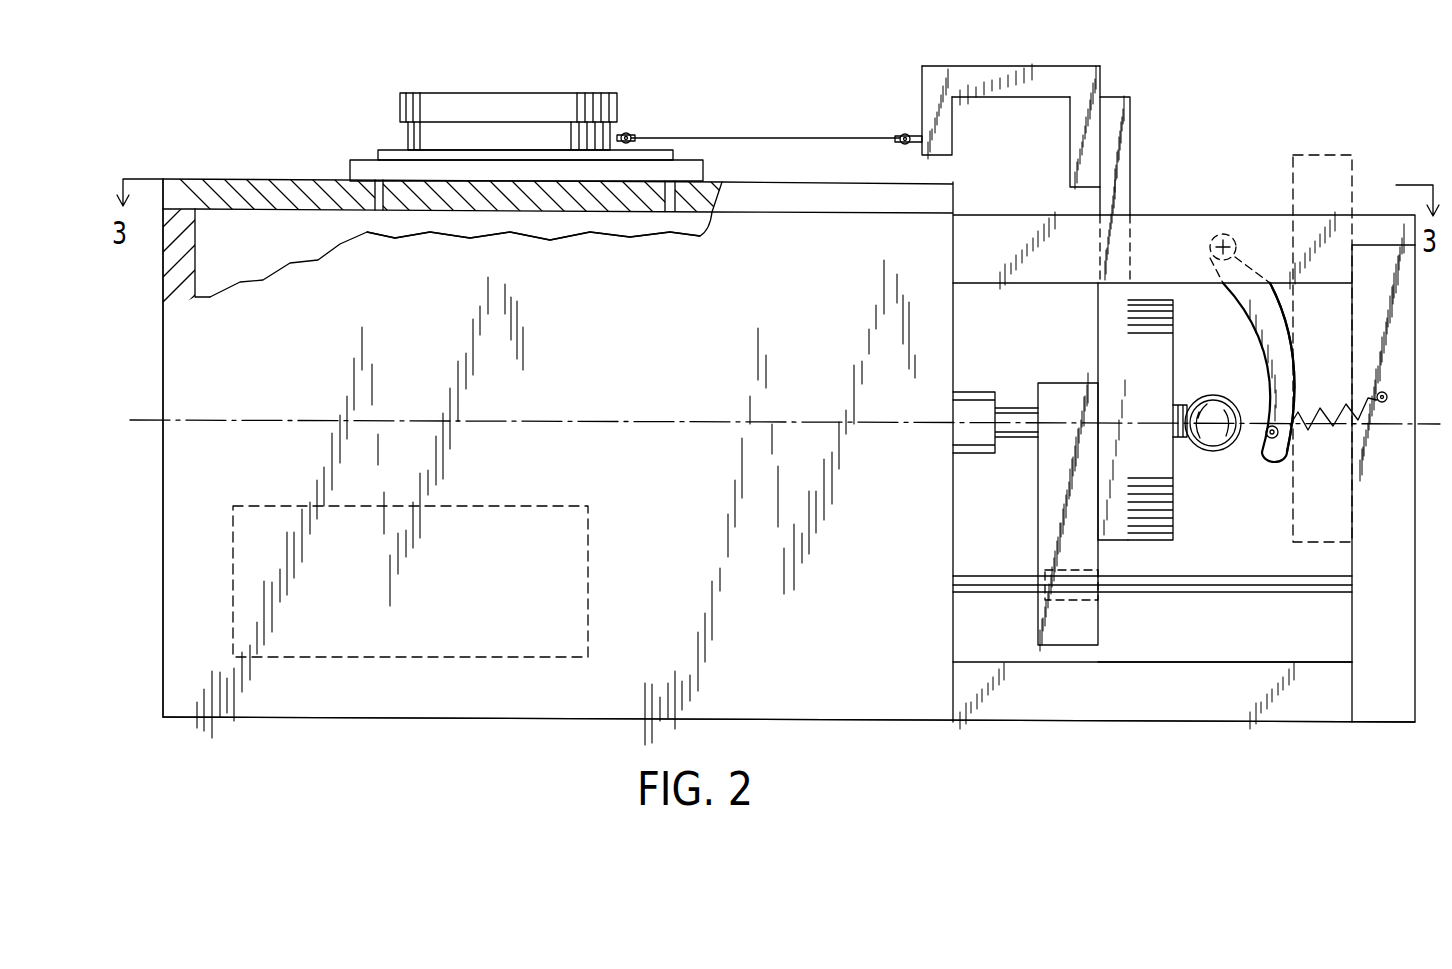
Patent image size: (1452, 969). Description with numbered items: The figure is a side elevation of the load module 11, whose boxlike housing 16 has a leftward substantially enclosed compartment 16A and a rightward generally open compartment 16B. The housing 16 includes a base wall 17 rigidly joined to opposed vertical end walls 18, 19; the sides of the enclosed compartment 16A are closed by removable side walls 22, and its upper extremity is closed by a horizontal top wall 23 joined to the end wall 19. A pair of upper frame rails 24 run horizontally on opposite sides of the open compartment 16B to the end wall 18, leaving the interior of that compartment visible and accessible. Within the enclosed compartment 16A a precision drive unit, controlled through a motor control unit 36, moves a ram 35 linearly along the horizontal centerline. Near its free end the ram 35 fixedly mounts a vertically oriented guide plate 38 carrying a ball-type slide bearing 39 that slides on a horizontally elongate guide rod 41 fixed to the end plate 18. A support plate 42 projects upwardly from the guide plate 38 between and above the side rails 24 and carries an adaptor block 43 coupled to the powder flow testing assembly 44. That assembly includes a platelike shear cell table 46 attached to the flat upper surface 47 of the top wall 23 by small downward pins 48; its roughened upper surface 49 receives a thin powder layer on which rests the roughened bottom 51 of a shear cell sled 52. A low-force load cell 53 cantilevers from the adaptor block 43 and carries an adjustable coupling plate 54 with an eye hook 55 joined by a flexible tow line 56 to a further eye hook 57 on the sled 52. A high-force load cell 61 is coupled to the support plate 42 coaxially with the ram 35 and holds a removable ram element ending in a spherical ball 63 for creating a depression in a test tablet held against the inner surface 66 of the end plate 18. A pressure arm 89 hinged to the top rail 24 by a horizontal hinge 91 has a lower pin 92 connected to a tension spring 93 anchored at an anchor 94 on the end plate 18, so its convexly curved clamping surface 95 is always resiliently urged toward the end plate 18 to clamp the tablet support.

The load module 11 is at (405, 731).
The boxlike housing 16 is at (861, 734).
The enclosed compartment 16A is at (268, 235).
The open compartment 16B is at (1147, 640).
The base wall 17 is at (1235, 680).
The end wall 18 is at (1395, 605).
The end wall 19 is at (172, 268).
The removable side walls 22 is at (200, 475).
The top wall 23 is at (567, 200).
The upper frame rails 24 is at (1160, 228).
The ram 35 is at (980, 395).
The motor control unit 36 is at (415, 525).
The guide plate 38 is at (1052, 490).
The slide bearing 39 is at (1065, 575).
The guide rod 41 is at (1190, 578).
The support plate 42 is at (1120, 128).
The adaptor block 43 is at (1105, 82).
The powder flow testing assembly 44 is at (690, 100).
The shear cell table 46 is at (460, 168).
The flat upper surface 47 is at (245, 177).
The pins 48 is at (672, 200).
The upper surface 49 is at (533, 150).
The bottom 51 is at (515, 150).
The shear cell sled 52 is at (425, 133).
The low-force transducer 53 is at (985, 75).
The coupling plate 54 is at (928, 100).
The eye hook 55 is at (903, 134).
The tow line 56 is at (765, 138).
The eye hook 57 is at (628, 133).
The high-force transducer 61 is at (1160, 368).
The ball 63 is at (1200, 445).
The inner surface 66 is at (1345, 505).
The pressure arm 89 is at (1263, 322).
The hinge 91 is at (1222, 238).
The pin 92 is at (1272, 440).
The tension spring 93 is at (1335, 403).
The anchor 94 is at (1387, 396).
The clamping surface 95 is at (1288, 325).